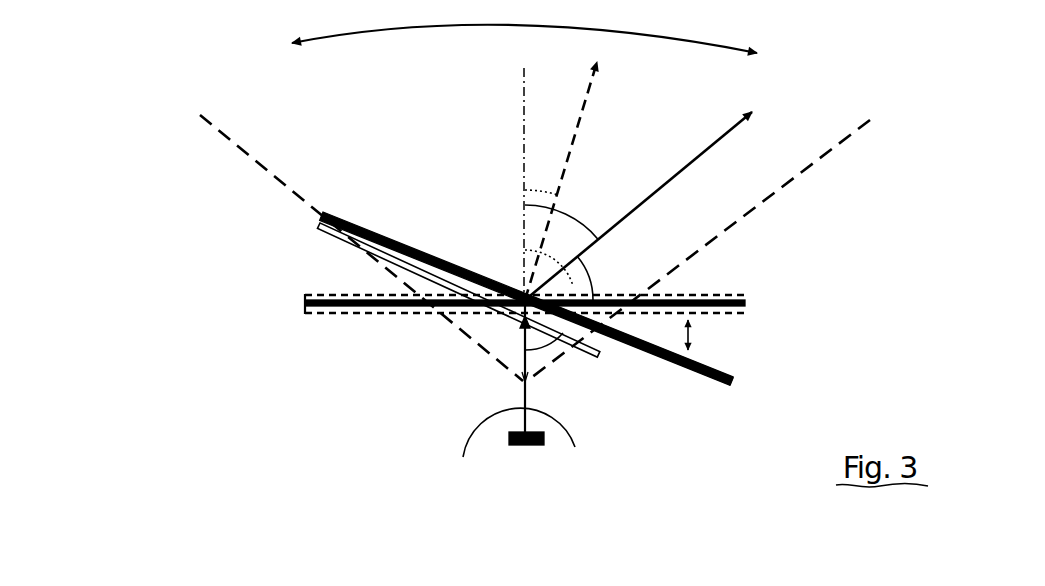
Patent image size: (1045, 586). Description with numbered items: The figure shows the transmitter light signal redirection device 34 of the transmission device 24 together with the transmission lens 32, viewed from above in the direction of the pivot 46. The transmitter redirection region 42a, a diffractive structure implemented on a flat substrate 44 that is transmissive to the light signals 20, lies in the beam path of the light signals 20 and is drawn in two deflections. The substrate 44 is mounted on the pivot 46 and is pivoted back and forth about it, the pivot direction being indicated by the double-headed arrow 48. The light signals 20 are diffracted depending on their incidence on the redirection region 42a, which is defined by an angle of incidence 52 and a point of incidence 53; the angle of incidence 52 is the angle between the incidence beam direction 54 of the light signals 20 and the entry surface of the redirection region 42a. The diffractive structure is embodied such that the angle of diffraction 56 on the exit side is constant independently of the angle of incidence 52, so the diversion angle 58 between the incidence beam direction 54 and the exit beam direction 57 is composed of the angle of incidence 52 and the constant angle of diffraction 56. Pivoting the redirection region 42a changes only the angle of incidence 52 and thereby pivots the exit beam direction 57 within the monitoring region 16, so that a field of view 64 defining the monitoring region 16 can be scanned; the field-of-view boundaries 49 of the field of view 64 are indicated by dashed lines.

The monitoring region 16 is at (400, 86).
The light signals 20 is at (551, 460).
The transmission device 24 is at (106, 62).
The transmission lens 32 is at (528, 447).
The transmitter light signal redirection device 34 is at (263, 210).
The transmitter redirection region 42a is at (421, 250).
The substrate 44 is at (304, 308).
The pivot 46 is at (521, 328).
The double-headed arrow 48 is at (697, 340).
The field-of-view boundaries 49 is at (200, 114).
The angle of incidence 52 is at (551, 345).
The point of incidence 53 is at (518, 319).
The incidence beam direction 54 is at (510, 453).
The angle of diffraction 56 is at (523, 249).
The exit beam direction 57 is at (601, 79).
The diversion angle 58 is at (523, 189).
The field of view 64 is at (434, 30).